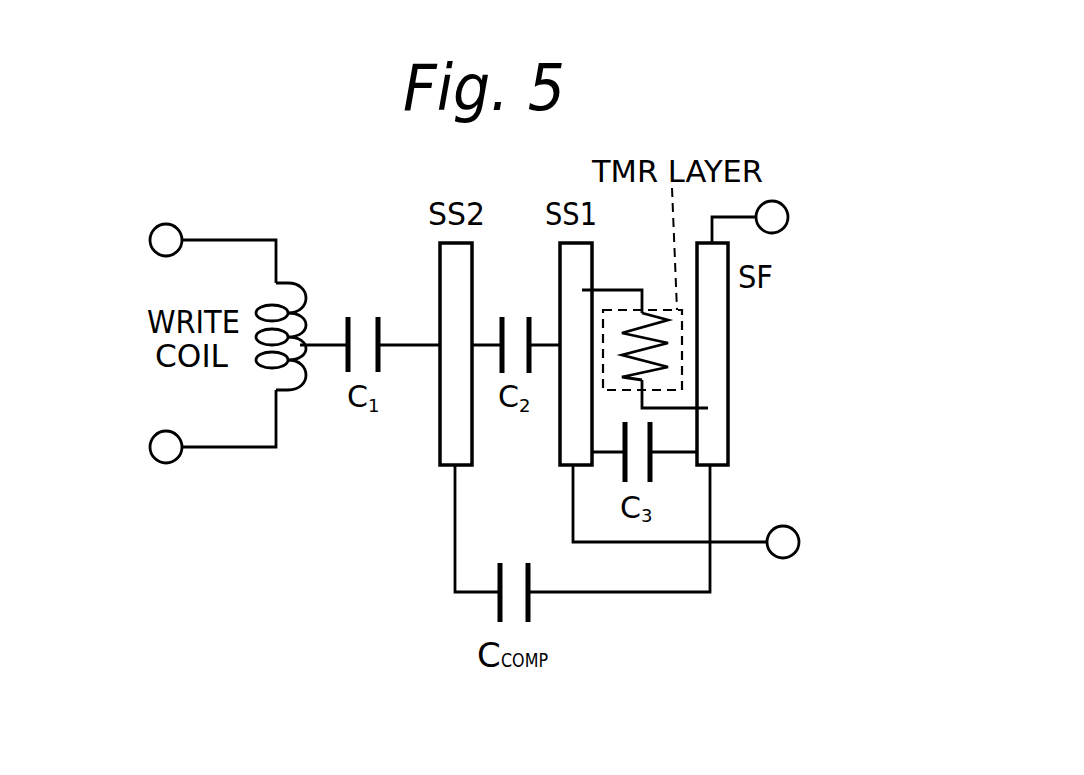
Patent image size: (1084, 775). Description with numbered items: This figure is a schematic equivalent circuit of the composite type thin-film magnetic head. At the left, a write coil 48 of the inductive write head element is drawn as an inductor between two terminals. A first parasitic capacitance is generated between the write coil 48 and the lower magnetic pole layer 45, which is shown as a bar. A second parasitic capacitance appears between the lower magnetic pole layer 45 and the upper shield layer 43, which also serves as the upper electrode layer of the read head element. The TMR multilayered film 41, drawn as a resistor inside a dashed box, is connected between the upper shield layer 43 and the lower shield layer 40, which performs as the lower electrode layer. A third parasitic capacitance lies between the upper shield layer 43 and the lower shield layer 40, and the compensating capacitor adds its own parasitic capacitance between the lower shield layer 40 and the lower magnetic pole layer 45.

The write coil 48 is at (290, 283).
The lower magnetic pole layer 45 is at (453, 293).
The upper shield layer 43 is at (572, 315).
The TMR multilayered film 41 is at (670, 308).
The lower shield layer 40 is at (717, 337).